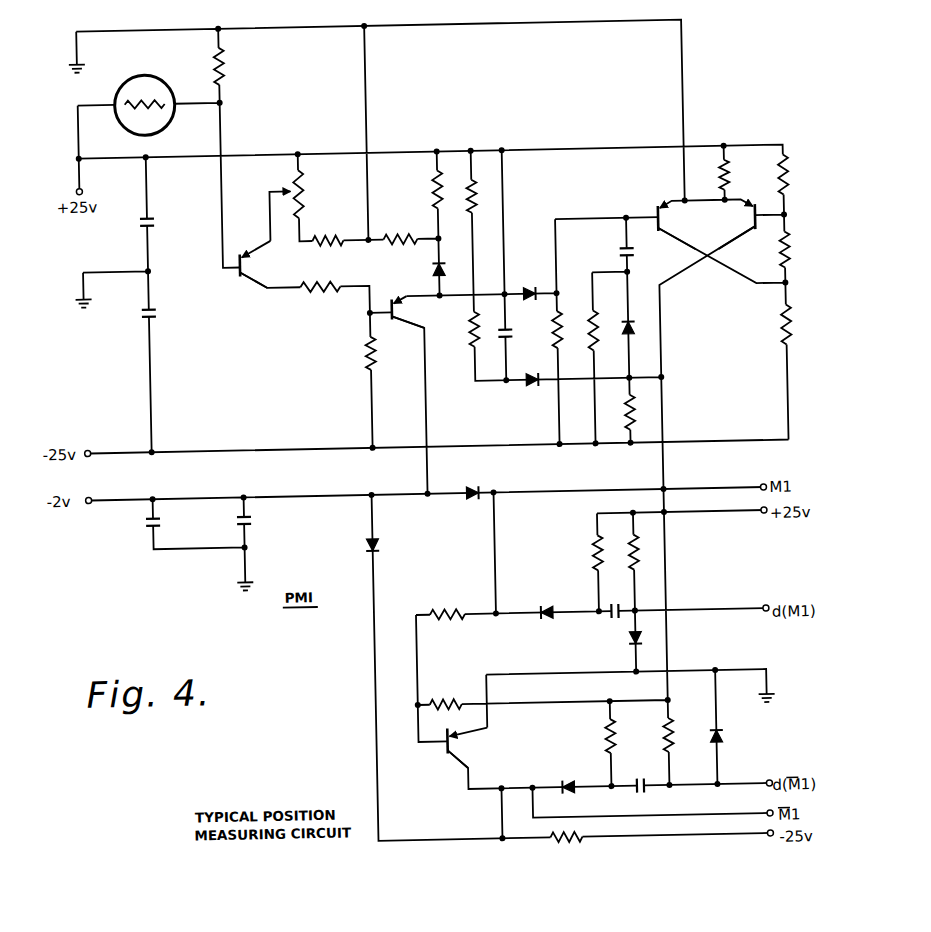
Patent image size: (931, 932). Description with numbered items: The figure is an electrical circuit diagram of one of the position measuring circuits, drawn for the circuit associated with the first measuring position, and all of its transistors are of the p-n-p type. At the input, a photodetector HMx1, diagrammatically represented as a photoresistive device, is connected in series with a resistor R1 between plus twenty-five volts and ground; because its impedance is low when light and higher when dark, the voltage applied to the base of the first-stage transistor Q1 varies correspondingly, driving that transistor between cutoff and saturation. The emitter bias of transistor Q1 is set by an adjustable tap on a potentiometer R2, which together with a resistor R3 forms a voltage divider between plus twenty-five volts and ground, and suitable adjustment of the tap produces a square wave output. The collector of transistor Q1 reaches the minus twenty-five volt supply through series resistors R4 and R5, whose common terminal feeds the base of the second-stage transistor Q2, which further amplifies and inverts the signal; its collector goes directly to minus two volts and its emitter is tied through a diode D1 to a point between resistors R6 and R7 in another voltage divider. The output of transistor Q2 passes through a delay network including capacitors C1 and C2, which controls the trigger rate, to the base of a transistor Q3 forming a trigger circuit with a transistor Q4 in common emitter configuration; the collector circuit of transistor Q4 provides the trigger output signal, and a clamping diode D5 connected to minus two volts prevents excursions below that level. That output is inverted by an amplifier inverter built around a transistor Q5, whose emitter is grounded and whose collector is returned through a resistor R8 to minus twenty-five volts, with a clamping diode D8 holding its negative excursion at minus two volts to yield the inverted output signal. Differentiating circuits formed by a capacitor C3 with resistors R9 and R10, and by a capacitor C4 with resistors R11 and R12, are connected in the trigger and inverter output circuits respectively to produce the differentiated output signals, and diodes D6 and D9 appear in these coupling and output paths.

The photodetector HMx1 is at (144, 98).
The resistor R1 is at (233, 66).
The potentiometer R2 is at (313, 194).
The resistor R3 is at (327, 233).
The series resistor R4 is at (320, 300).
The series resistor R5 is at (354, 354).
The resistor R6 is at (400, 232).
The resistor R7 is at (425, 189).
The resistor R8 is at (566, 849).
The resistor R9 is at (583, 553).
The resistor R10 is at (621, 551).
The resistor R11 is at (597, 736).
The resistor R12 is at (654, 735).
The capacitor C1 is at (516, 326).
The capacitor C2 is at (639, 252).
The capacitor C3 is at (612, 602).
The capacitor C4 is at (640, 774).
The diode D1 is at (449, 262).
The clamping diode D5 is at (467, 504).
The diode D6 is at (550, 625).
The clamping diode D8 is at (387, 544).
The diode D9 is at (571, 776).
The transistor Q1 is at (247, 278).
The transistor Q2 is at (405, 320).
The transistor Q3 is at (668, 216).
The transistor Q4 is at (739, 216).
The transistor Q5 is at (443, 753).